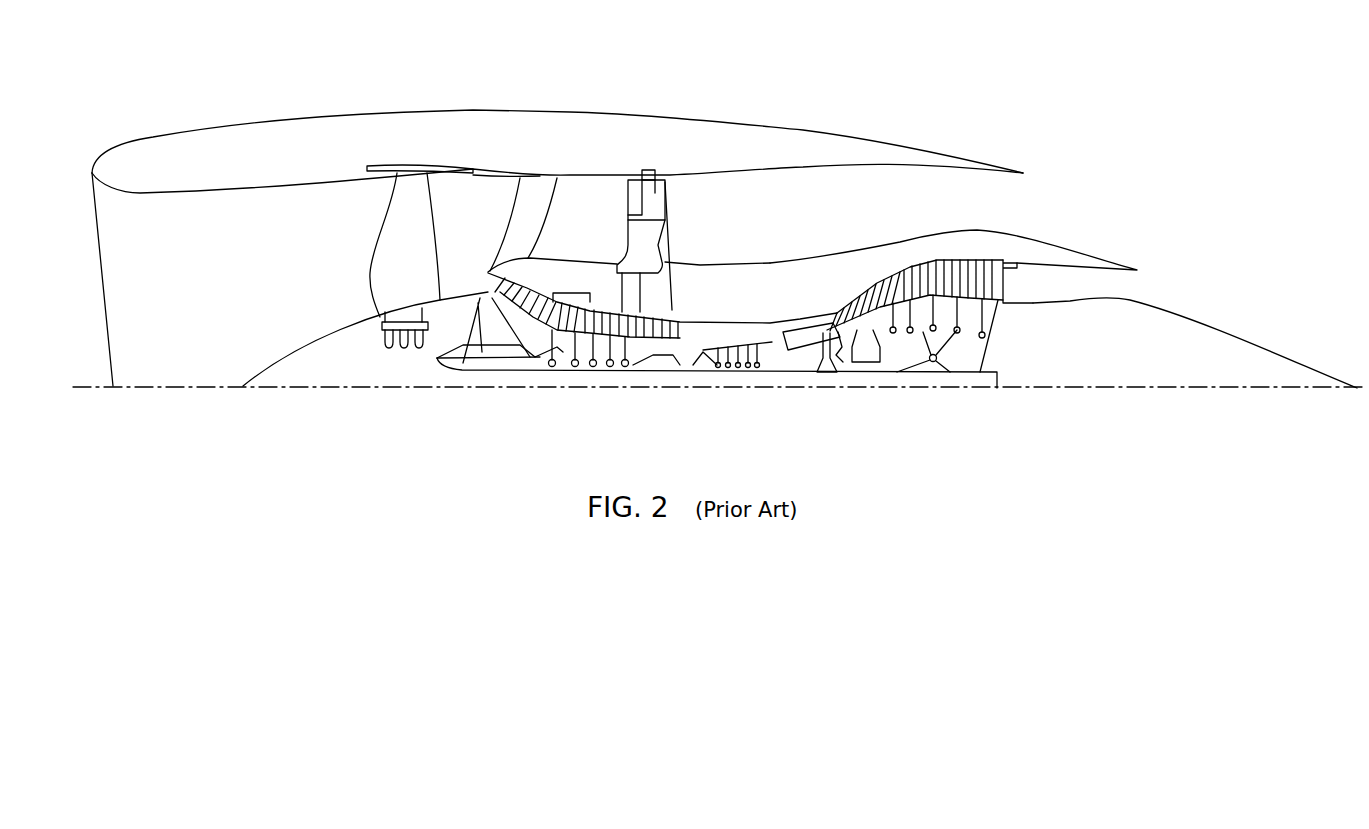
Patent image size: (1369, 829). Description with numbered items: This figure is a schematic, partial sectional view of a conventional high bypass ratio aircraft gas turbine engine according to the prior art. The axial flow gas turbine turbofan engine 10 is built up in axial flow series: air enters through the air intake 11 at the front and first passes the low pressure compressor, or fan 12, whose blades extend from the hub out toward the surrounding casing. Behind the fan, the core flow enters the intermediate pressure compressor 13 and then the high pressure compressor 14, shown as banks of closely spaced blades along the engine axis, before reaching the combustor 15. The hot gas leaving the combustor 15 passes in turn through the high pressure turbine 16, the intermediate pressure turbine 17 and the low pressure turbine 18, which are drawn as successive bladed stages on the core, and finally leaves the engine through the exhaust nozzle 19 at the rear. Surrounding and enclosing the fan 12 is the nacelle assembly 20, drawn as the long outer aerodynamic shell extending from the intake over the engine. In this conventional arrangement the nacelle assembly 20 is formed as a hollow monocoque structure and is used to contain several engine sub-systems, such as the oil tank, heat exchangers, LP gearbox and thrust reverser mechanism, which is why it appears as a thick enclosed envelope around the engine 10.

The axial flow gas turbine turbofan engine 10 is at (1068, 106).
The air intake 11 is at (92, 313).
The low pressure compressor (or fan) 12 is at (402, 217).
The intermediate pressure compressor 13 is at (565, 352).
The high pressure compressor 14 is at (733, 370).
The combustor 15 is at (792, 340).
The high pressure turbine 16 is at (867, 358).
The intermediate pressure turbine 17 is at (934, 362).
The low pressure turbine 18 is at (983, 268).
The exhaust nozzle 19 is at (1195, 218).
The nacelle assembly 20 is at (532, 110).